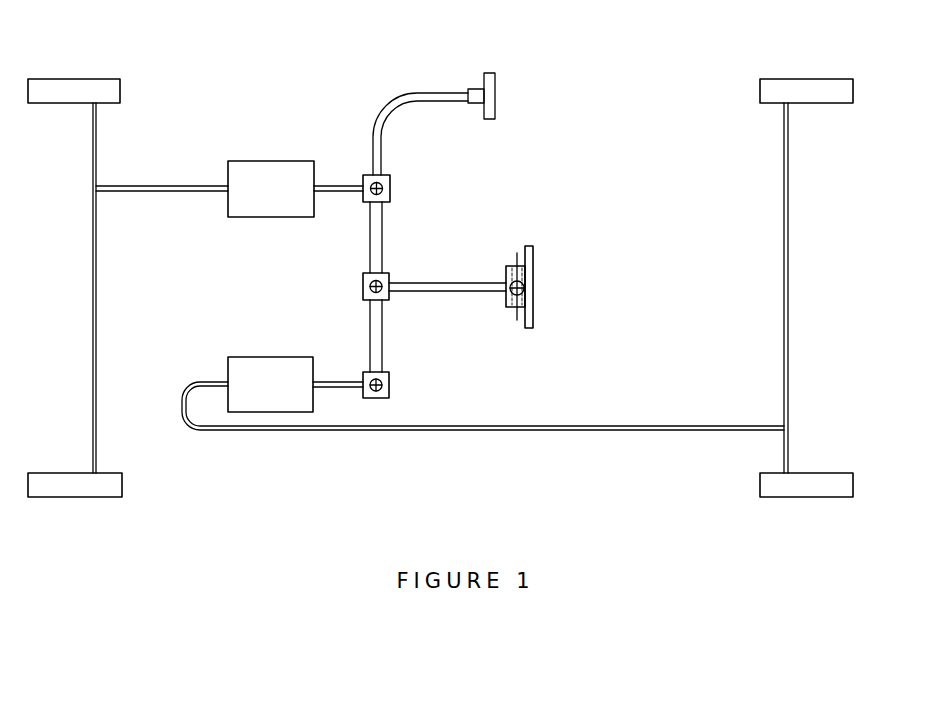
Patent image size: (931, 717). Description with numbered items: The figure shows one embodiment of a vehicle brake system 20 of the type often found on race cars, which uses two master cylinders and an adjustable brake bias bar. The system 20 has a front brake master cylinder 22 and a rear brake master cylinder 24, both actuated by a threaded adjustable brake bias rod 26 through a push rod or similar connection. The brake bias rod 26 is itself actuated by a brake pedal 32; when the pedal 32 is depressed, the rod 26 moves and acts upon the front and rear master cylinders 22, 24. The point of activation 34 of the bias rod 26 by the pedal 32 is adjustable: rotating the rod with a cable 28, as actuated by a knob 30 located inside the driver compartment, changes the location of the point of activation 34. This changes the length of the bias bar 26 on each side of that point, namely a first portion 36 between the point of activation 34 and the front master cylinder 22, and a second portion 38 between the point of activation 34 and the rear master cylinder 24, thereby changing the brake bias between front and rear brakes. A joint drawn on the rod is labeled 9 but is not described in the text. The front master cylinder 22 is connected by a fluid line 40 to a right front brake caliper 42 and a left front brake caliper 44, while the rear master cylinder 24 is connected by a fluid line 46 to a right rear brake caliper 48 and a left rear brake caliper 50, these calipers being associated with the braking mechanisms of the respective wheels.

The vehicle brake system 20 is at (236, 553).
The front brake master cylinder 22 is at (272, 161).
The rear brake master cylinder 24 is at (272, 357).
The brake bias rod 26 is at (362, 240).
The cable 28 is at (387, 107).
The knob 30 is at (496, 93).
The brake pedal 32 is at (533, 287).
The point of activation 34 is at (363, 284).
The first portion 36 is at (382, 245).
The second portion 38 is at (383, 335).
The upper gear box 9 is at (388, 176).
The fluid line 40 is at (170, 192).
The right front brake caliper 42 is at (85, 79).
The left front brake caliper 44 is at (75, 497).
The fluid line 46 is at (412, 432).
The right rear brake caliper 48 is at (806, 79).
The left rear brake caliper 50 is at (806, 497).